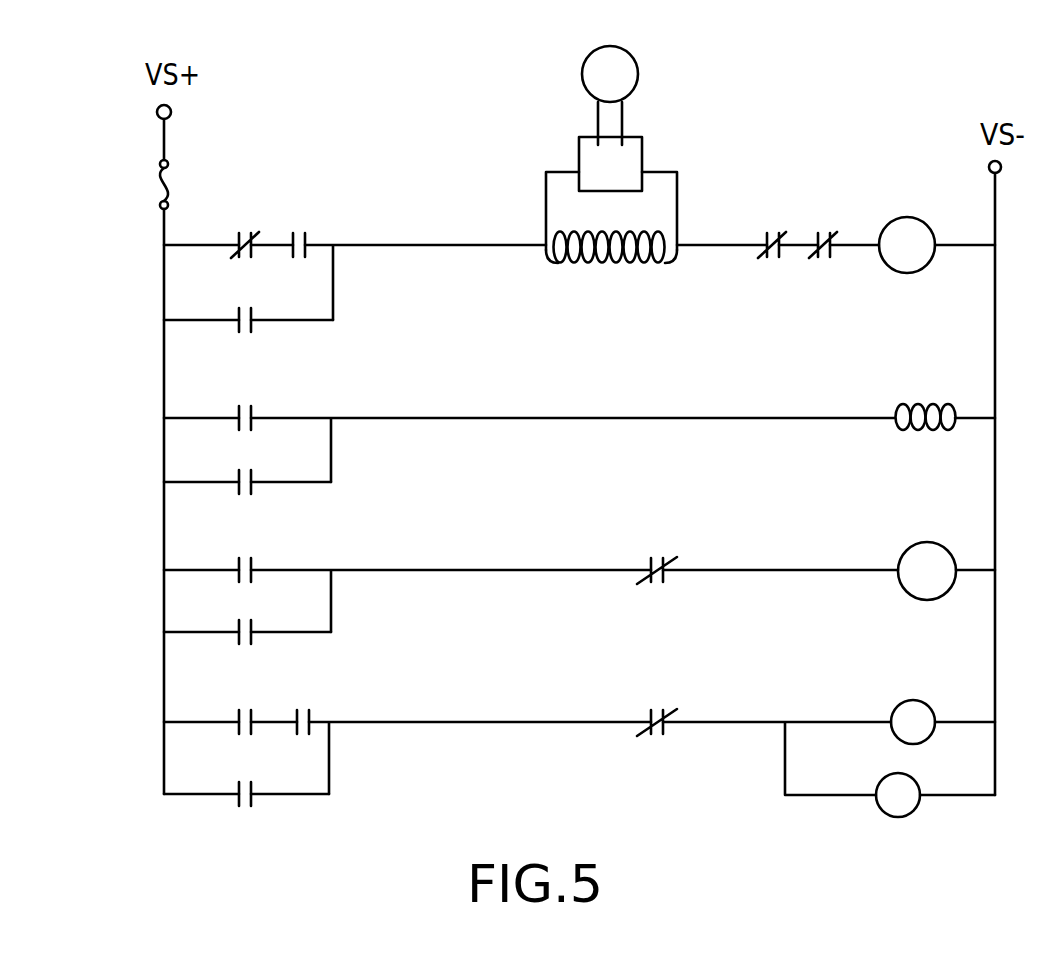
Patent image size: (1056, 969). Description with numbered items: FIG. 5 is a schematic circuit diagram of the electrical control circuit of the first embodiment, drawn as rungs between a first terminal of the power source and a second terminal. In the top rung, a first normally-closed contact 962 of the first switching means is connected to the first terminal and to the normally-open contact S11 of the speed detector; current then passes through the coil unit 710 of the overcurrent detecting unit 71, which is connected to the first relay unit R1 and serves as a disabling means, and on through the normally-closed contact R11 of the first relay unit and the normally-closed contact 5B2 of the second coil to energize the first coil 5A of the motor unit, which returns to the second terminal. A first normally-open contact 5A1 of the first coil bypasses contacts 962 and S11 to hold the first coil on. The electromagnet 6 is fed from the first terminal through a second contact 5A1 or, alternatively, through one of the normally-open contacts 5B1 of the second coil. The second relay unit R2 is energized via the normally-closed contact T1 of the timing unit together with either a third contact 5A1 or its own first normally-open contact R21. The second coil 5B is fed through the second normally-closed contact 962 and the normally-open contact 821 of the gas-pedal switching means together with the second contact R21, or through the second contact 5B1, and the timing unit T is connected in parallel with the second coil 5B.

The normally-closed contact 962 is at (449, 465).
The normally-open contact of detector S11 is at (300, 225).
The normally-open contact of first coil 5A1 is at (246, 427).
The normally-open contact of second coil 5B1 is at (245, 620).
The normally-open contact of second relay unit R21 is at (276, 659).
The normally-open contact 821 is at (242, 703).
The normally-closed contact of timing unit T1 is at (657, 550).
The normally-closed contact of first relay unit R11 is at (770, 222).
The normally-closed contact of second coil 5B2 is at (831, 222).
The first relay unit R1 is at (610, 65).
The overcurrent detecting unit 71 is at (643, 157).
The coil unit 710 is at (567, 262).
The first coil 5A is at (910, 220).
The electromagnet 6 is at (929, 406).
The second relay unit R2 is at (926, 562).
The second coil 5B is at (915, 712).
The timing unit T is at (912, 803).